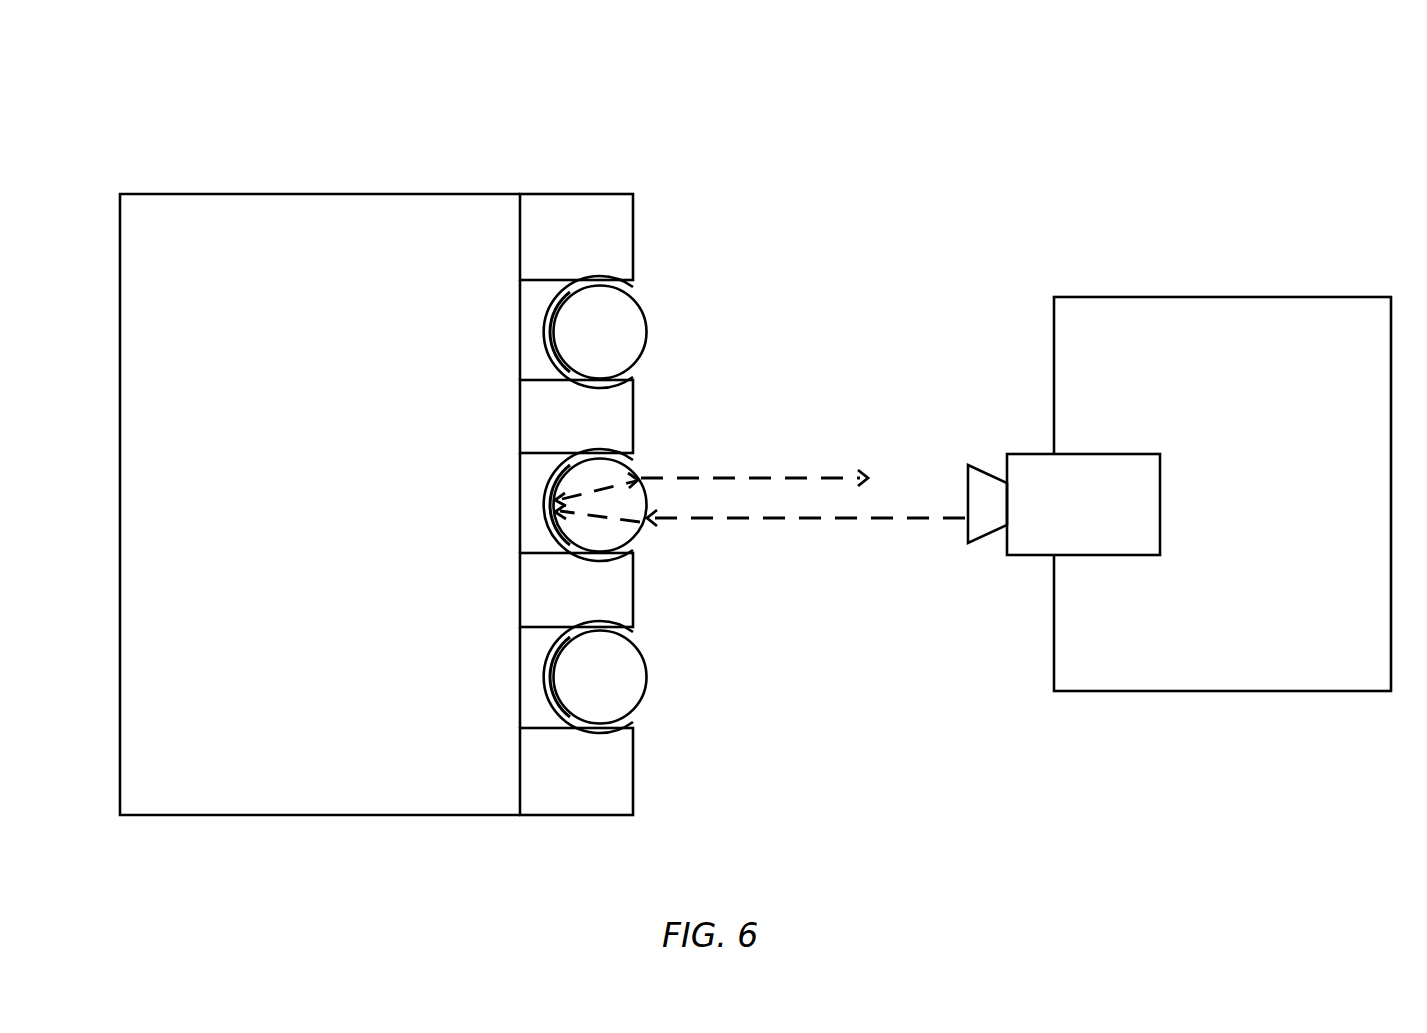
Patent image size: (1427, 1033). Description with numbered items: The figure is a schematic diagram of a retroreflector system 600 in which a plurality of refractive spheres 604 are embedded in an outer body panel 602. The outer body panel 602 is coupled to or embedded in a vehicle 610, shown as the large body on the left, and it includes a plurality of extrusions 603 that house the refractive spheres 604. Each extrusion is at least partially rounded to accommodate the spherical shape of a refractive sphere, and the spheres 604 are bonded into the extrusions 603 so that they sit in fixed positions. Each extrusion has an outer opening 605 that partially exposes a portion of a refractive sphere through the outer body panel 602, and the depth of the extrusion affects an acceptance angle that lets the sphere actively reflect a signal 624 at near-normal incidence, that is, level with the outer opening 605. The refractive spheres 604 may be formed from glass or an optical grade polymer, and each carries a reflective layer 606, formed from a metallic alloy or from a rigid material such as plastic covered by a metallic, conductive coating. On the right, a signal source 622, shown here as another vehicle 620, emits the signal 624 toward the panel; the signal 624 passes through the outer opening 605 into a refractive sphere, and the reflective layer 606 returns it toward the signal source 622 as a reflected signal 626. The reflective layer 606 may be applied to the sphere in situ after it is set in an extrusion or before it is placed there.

The retroreflector system 600 is at (158, 134).
The outer body panel 602 is at (644, 233).
The plurality of extrusions 603 is at (516, 345).
The refractive spheres 604 is at (601, 282).
The outer opening 605 is at (646, 367).
The reflective layer 606 is at (538, 512).
The vehicle 610 is at (320, 504).
The vehicle 620 is at (1222, 494).
The signal source 622 is at (1149, 442).
The signal 624 is at (811, 537).
The reflected signal 626 is at (690, 460).